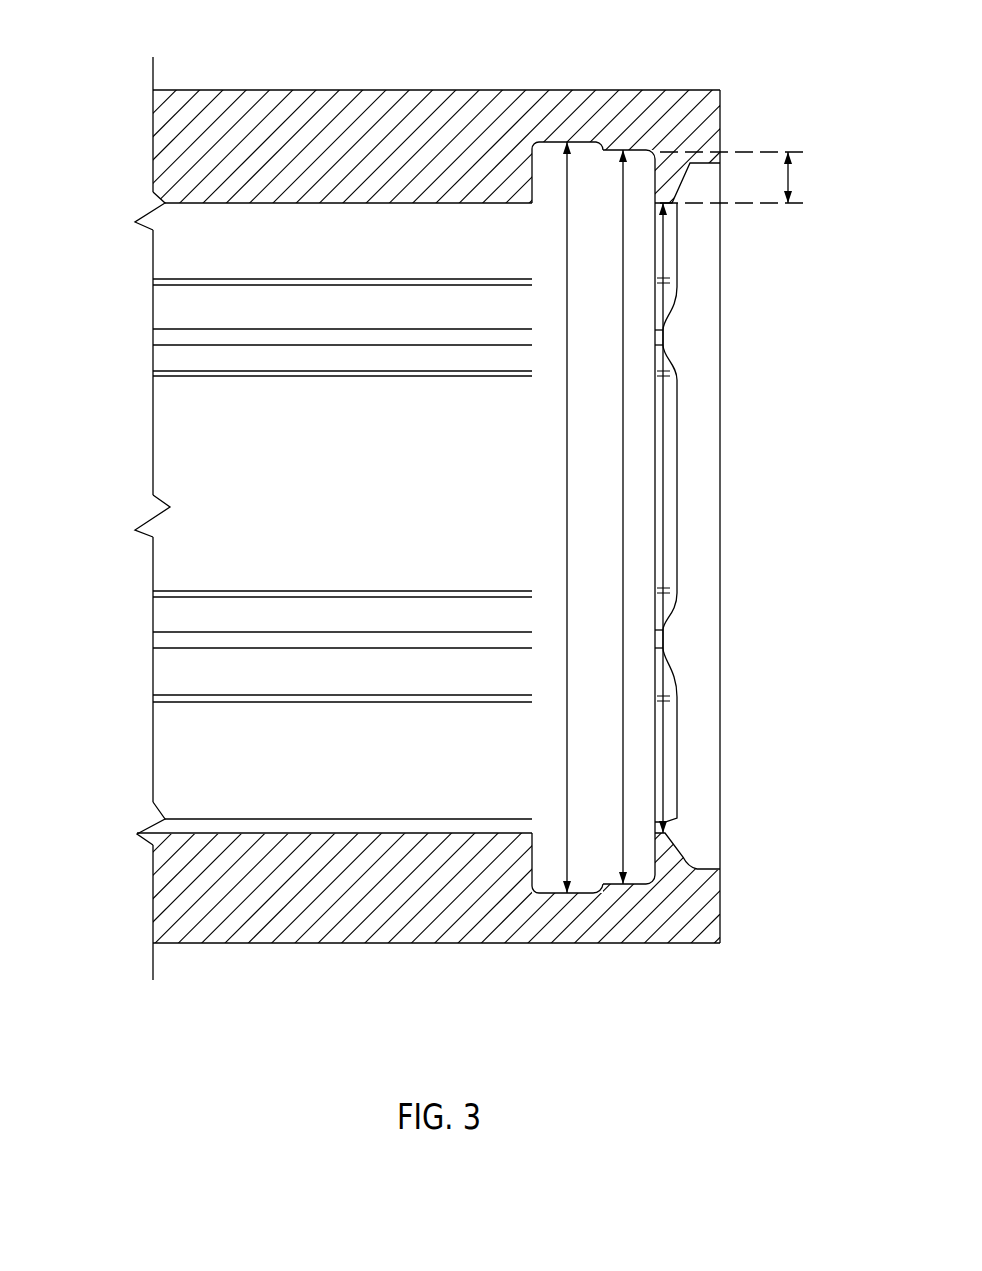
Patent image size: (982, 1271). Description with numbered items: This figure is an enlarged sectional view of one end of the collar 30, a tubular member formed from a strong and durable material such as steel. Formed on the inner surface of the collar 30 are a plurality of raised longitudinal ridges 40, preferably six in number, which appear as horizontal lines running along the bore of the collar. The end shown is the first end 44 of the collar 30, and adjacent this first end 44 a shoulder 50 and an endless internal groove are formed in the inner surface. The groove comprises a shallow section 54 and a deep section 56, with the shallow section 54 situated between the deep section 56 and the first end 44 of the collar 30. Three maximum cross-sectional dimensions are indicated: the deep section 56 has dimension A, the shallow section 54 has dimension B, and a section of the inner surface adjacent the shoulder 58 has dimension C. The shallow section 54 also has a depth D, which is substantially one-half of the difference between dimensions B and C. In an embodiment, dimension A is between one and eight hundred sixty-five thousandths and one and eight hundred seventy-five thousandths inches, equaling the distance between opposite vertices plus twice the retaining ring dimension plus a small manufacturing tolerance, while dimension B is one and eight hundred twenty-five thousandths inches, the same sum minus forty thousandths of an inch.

The collar 30 is at (433, 123).
The raised longitudinal ridges 40 is at (289, 524).
The first end 44 is at (443, 528).
The shoulder 50 is at (728, 516).
The shallow section 54 is at (607, 468).
The deep section 56 is at (547, 469).
The section of the inner surface adjacent the shoulder 58 is at (722, 512).
The maximum cross-sectional dimension of the deep section A is at (667, 517).
The maximum cross-sectional dimension of the shallow section B is at (695, 517).
The maximum cross-sectional dimension of the inner surface section adjacent the shou C is at (712, 518).
The depth of the shallow section D is at (755, 177).